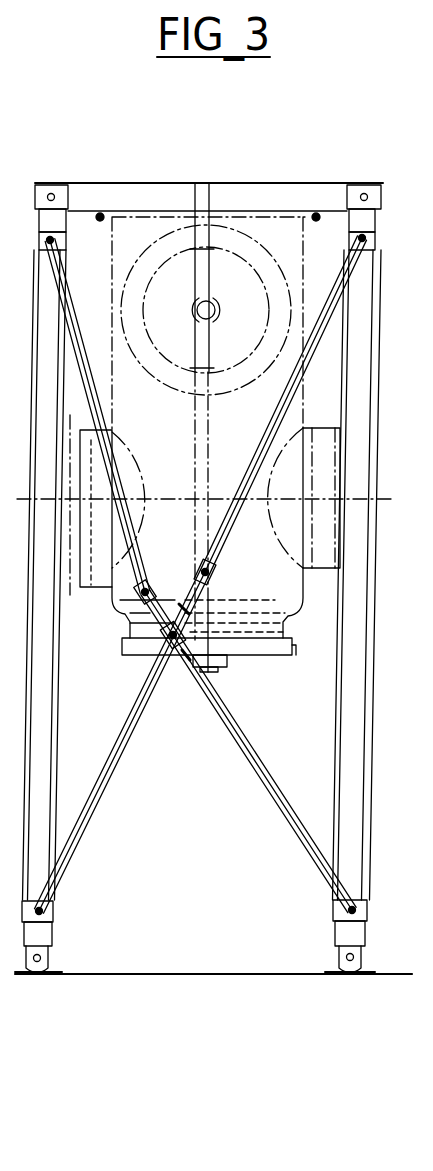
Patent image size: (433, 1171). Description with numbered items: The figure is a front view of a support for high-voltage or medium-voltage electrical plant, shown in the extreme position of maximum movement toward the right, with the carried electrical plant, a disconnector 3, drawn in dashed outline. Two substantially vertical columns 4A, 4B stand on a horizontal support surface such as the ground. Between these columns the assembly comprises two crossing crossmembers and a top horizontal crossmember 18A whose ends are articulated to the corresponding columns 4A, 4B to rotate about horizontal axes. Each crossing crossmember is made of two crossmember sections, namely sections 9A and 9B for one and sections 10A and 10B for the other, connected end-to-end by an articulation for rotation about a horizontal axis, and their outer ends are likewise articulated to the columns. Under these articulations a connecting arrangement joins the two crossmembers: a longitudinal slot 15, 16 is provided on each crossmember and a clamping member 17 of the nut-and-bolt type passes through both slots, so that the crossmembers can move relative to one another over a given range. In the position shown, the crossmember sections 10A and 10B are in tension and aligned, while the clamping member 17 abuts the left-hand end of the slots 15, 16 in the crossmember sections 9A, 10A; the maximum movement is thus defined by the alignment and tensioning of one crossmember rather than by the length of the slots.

The disconnector 3 is at (305, 262).
The column 4A is at (47, 573).
The column 4B is at (357, 597).
The crossmember section 9A is at (97, 414).
The crossmember section 9B is at (265, 785).
The crossmember section 10A is at (270, 437).
The crossmember section 10B is at (108, 772).
The longitudinal slot 15 is at (188, 652).
The longitudinal slot 16 is at (185, 605).
The clamping member 17 is at (210, 636).
The top horizontal crossmember 18A is at (248, 197).